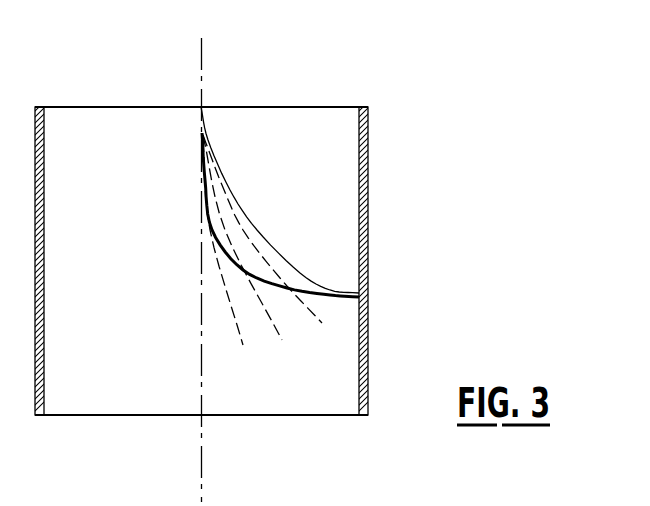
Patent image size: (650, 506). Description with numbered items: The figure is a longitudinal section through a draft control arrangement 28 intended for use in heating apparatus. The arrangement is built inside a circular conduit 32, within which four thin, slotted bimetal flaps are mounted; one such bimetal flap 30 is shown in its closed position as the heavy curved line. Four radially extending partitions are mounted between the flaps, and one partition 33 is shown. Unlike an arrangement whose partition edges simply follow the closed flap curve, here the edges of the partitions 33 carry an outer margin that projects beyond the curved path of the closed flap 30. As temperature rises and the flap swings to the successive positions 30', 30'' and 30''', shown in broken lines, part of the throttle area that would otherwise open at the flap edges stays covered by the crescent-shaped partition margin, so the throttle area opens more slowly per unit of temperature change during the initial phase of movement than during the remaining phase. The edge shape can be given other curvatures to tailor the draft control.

The draft control arrangement 28 is at (376, 198).
The circular conduit 32 is at (368, 248).
The bimetal flap 30 is at (310, 237).
The first incremental flap position 30' is at (273, 252).
The second incremental flap position 30'' is at (254, 263).
The third incremental flap position 30''' is at (231, 266).
The radially extending partition 33 is at (183, 270).